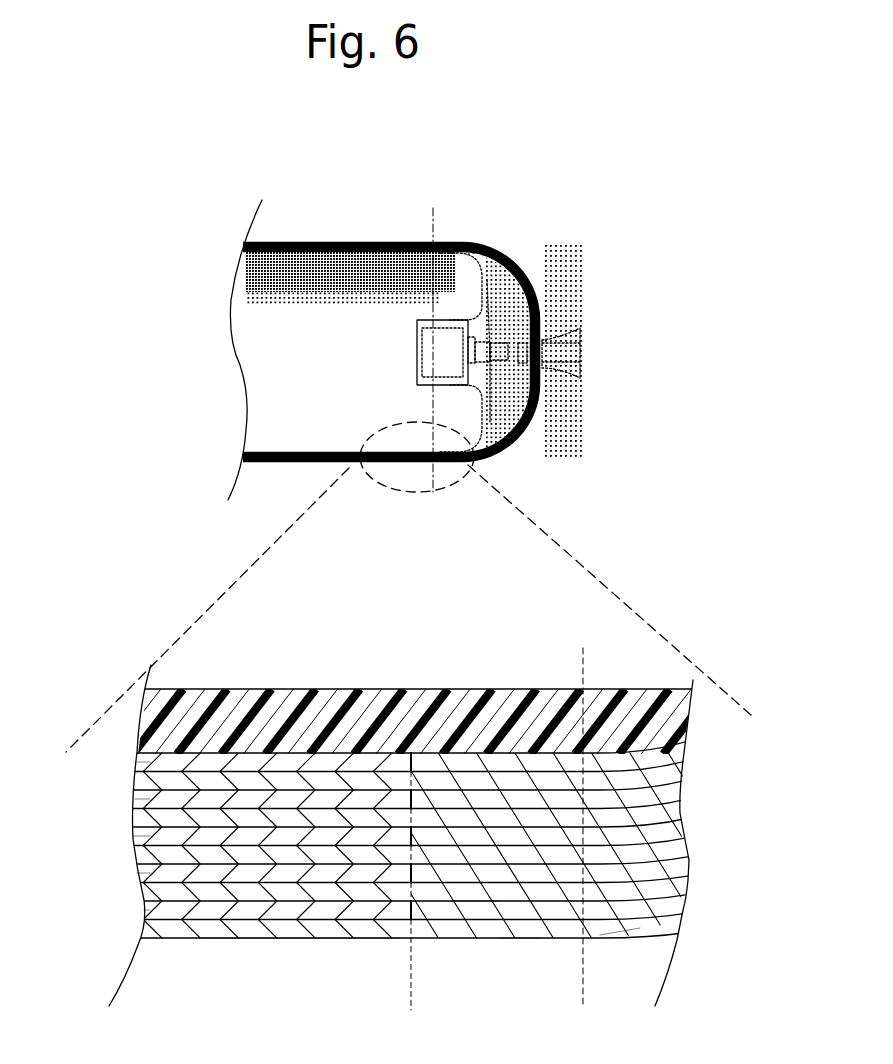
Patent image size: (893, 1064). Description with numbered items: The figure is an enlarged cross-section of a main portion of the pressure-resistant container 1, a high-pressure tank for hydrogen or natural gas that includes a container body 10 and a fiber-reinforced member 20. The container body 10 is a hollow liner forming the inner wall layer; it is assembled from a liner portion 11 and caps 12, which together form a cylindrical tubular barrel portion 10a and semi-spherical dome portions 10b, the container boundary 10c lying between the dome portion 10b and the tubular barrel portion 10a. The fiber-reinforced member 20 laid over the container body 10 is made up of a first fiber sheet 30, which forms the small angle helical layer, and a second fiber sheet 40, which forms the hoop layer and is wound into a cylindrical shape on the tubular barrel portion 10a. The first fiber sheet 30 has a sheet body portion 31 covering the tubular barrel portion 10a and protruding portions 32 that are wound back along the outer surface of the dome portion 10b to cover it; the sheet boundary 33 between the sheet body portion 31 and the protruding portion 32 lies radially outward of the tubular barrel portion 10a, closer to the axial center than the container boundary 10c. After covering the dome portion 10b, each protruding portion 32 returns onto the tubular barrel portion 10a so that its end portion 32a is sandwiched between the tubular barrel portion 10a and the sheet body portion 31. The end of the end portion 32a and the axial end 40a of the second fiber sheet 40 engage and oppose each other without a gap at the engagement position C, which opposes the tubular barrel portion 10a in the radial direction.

The pressure-resistant container 1 is at (527, 223).
The container body 10 is at (163, 702).
The tubular barrel portion 10a is at (338, 235).
The dome portion 10b is at (537, 297).
The container boundary 10c is at (433, 202).
The liner portion 11 is at (273, 390).
The cap 12 is at (517, 388).
The fiber-reinforced member 20 is at (293, 465).
The first fiber sheet 30 is at (696, 804).
The sheet body portion 31 is at (292, 924).
The protruding portion 32 is at (629, 923).
The end portion 32a is at (466, 906).
The sheet boundary 33 is at (517, 935).
The second fiber sheet 40 is at (155, 760).
The end 40a is at (438, 925).
The engagement position C is at (409, 902).